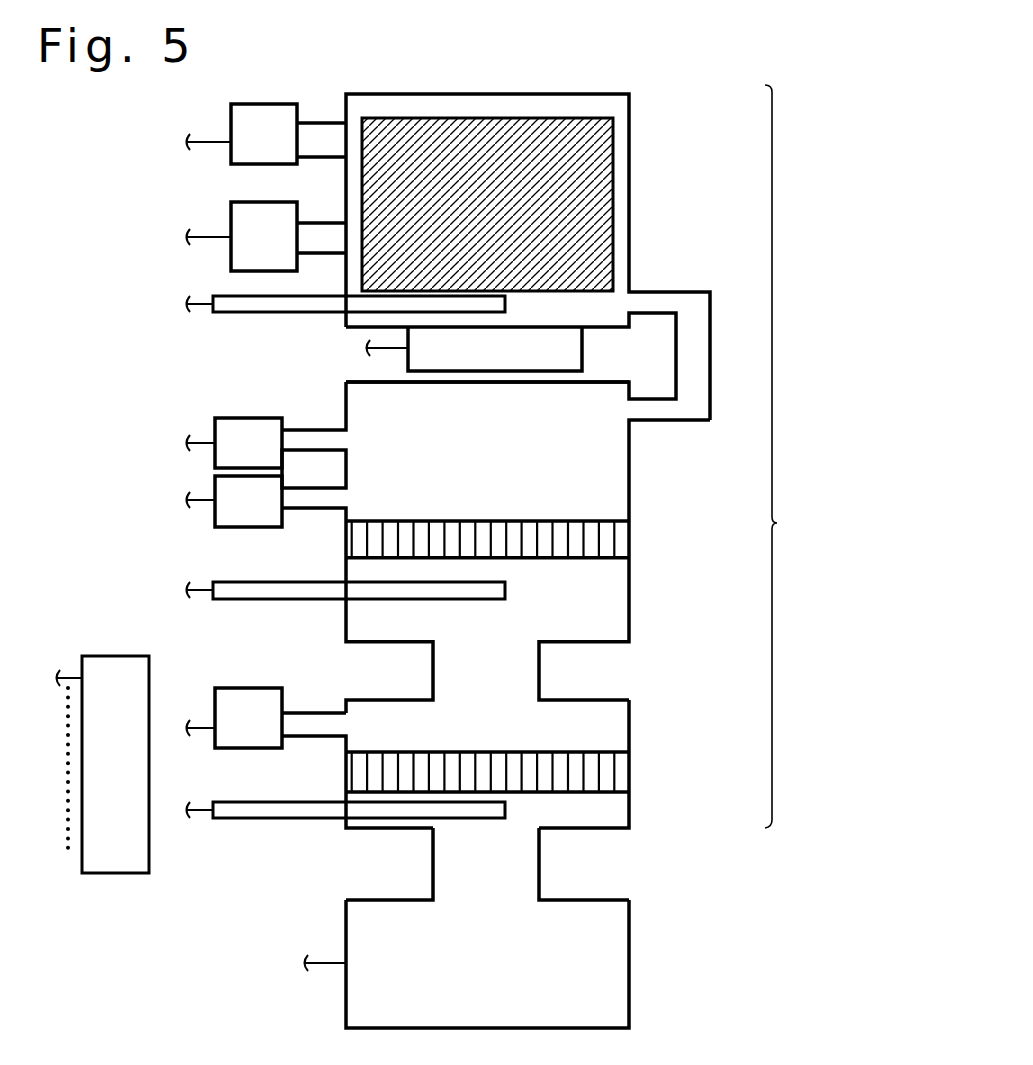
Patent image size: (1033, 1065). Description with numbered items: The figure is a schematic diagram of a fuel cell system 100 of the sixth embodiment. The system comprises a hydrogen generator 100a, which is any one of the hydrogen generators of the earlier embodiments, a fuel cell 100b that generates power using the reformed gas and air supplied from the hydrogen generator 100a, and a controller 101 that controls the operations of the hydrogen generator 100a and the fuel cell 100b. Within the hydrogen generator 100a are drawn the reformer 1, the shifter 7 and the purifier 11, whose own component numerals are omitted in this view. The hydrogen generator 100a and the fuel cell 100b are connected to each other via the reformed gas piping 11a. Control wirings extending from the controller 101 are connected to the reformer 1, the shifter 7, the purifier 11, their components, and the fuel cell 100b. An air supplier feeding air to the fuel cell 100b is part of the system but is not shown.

The reformer 1 is at (635, 130).
The shifter 7 is at (635, 483).
The purifier 11 is at (635, 720).
The reformed gas piping 11a is at (510, 866).
The fuel cell system 100 is at (807, 125).
The hydrogen generator 100a is at (805, 456).
The fuel cell 100b is at (635, 982).
The controller 101 is at (77, 865).